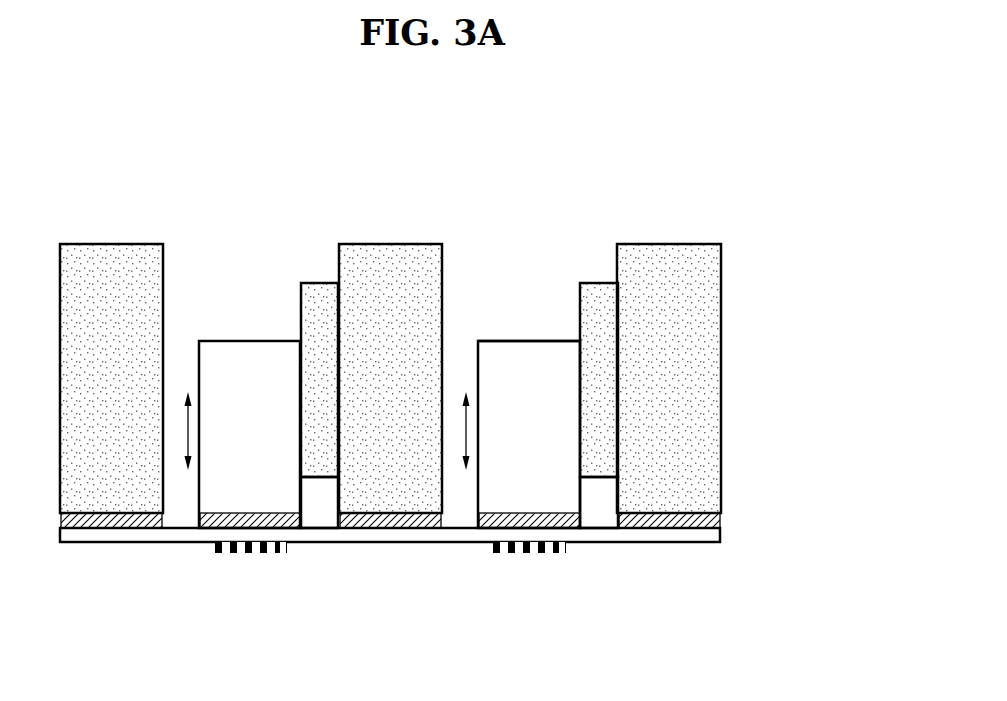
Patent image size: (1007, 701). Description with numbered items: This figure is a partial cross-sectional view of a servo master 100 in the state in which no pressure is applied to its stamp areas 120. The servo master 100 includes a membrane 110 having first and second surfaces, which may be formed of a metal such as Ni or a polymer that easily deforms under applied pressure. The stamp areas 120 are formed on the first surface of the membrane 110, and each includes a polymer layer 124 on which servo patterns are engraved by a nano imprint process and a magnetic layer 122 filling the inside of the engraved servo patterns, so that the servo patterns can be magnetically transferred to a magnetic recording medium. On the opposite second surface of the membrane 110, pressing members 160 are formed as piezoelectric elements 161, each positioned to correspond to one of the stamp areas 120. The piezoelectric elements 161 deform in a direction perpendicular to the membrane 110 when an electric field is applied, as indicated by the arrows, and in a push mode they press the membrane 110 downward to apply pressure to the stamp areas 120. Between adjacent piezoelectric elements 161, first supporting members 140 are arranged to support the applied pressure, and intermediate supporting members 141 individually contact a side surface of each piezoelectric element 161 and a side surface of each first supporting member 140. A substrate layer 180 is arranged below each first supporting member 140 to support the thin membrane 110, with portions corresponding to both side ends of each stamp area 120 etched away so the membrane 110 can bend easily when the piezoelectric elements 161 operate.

The servo master 100 is at (746, 202).
The membrane 110 is at (720, 536).
The stamp areas 120 is at (178, 617).
The magnetic layer 122 is at (226, 553).
The polymer layer 124 is at (217, 553).
The first supporting members 140 is at (661, 252).
The intermediate supporting members 141 is at (598, 295).
The pressing members 160 is at (503, 312).
The piezoelectric elements 161 is at (536, 350).
The substrate layer 180 is at (720, 522).